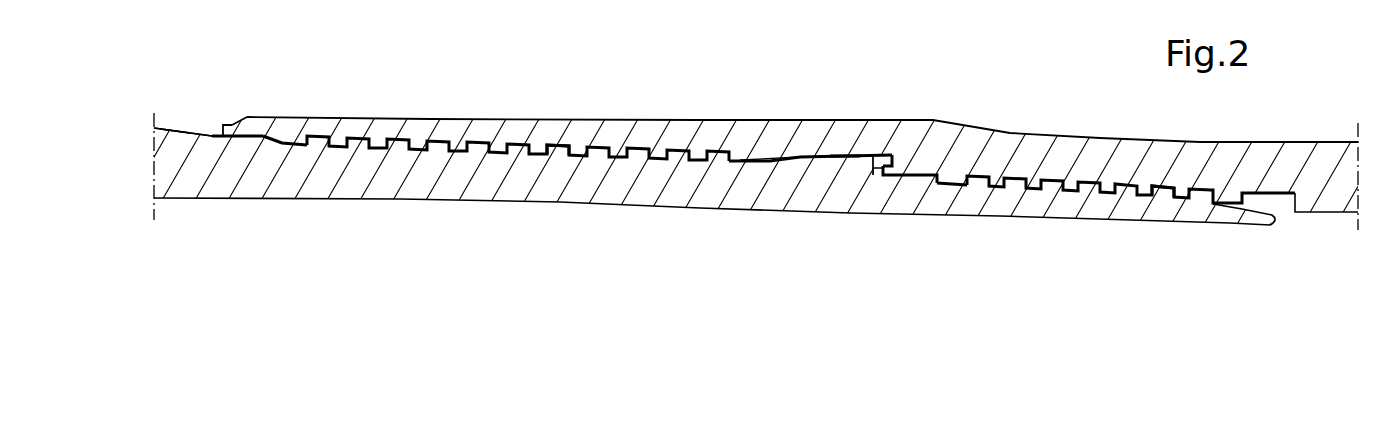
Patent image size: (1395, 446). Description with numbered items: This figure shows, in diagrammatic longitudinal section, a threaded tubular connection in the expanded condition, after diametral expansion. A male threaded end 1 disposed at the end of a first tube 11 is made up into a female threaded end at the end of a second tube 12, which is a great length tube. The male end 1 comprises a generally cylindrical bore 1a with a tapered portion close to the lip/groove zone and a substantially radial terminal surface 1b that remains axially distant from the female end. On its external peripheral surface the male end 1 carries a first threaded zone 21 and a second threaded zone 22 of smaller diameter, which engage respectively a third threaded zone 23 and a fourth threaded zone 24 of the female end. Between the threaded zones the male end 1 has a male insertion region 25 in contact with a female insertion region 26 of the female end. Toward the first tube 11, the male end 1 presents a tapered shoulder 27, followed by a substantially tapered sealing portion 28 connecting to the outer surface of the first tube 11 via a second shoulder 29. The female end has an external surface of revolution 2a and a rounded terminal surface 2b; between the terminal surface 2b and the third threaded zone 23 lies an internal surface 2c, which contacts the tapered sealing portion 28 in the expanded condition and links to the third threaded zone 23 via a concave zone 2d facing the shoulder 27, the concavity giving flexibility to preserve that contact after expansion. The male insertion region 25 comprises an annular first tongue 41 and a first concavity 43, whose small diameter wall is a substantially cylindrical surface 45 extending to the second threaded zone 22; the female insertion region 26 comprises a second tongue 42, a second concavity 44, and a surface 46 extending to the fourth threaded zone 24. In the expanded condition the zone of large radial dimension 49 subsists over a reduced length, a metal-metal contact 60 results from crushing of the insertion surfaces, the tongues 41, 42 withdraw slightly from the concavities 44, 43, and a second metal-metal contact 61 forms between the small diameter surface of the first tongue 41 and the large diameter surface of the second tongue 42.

The male threaded end 1 is at (675, 198).
The bore 1a is at (388, 200).
The terminal surface 1b is at (1273, 217).
The external surface of revolution 2a is at (618, 121).
The terminal surface 2b is at (208, 134).
The internal surface 2c is at (242, 138).
The concave zone 2d is at (293, 142).
The first tube 11 is at (166, 128).
The second tube 12 is at (1343, 140).
The first threaded zone 21 is at (562, 156).
The second threaded zone 22 is at (1167, 192).
The third threaded zone 23 is at (500, 144).
The fourth threaded zone 24 is at (1108, 186).
The male insertion region 25 is at (830, 182).
The female insertion region 26 is at (800, 132).
The shoulder 27 is at (277, 134).
The tapered sealing portion 28 is at (233, 127).
The second shoulder 29 is at (173, 138).
The first tongue 41 is at (877, 167).
The second tongue 42 is at (921, 166).
The first concavity 43 is at (876, 176).
The second concavity 44 is at (902, 164).
The cylindrical surface 45 is at (943, 184).
The surface 46 is at (907, 176).
The zone with a large radial dimension 49 is at (753, 158).
The metal-metal contact 60 is at (840, 156).
The second metal-metal contact 61 is at (882, 156).